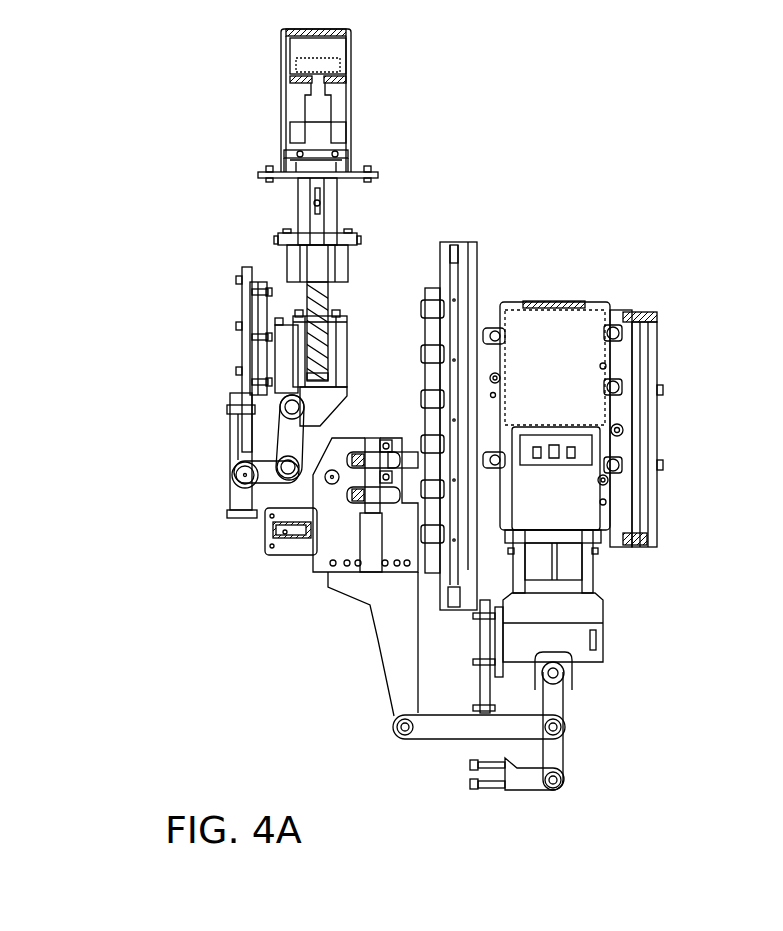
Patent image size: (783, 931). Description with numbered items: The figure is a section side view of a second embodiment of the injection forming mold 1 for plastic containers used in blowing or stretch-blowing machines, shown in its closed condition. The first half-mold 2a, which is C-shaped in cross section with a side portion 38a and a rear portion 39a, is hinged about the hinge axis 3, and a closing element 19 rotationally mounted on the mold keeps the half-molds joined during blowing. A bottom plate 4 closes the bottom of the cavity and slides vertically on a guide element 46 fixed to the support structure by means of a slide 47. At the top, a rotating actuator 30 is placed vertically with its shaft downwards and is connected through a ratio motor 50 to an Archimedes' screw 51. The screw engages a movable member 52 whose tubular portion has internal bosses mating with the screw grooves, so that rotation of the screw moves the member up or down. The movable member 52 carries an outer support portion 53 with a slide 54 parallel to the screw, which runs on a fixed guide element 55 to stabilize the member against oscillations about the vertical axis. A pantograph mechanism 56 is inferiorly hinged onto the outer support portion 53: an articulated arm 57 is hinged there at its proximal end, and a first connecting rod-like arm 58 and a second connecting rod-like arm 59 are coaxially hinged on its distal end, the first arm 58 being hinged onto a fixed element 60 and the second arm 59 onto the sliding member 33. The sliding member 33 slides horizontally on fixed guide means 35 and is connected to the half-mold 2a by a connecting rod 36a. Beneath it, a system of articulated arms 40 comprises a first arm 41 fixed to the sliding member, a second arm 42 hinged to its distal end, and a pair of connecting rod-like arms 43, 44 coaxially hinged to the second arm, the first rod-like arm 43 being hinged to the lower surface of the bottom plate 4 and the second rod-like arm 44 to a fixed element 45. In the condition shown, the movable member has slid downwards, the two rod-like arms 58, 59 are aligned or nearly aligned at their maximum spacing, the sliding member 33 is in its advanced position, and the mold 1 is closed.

The injection forming mold 1 is at (540, 124).
The first half-mold 2a is at (550, 318).
The hinge axis 3 is at (460, 242).
The bottom plate 4 is at (580, 650).
The closing element 19 is at (650, 413).
The actuator 30 is at (352, 78).
The sliding member 33 is at (327, 580).
The guide means 35 is at (282, 540).
The connecting rod 36a is at (402, 440).
The side portion 38a is at (578, 370).
The rear portion 39a is at (428, 330).
The system of articulated arms 40 is at (362, 720).
The first arm 41 is at (385, 645).
The second arm 42 is at (457, 725).
The first connecting rod-like arm 43 is at (557, 705).
The second connecting rod-like arm 44 is at (558, 758).
The fixed element 45 is at (520, 785).
The guide element 46 is at (480, 680).
The slide 47 is at (565, 675).
The ratio motor 50 is at (287, 277).
The Archimedes' screw 51 is at (330, 298).
The movable member 52 is at (343, 333).
The outer support portion 53 is at (285, 345).
The slide 54 is at (272, 365).
The guide element 55 is at (246, 305).
The pantograph mechanism 56 is at (212, 472).
The articulated arm 57 is at (296, 425).
The first connecting rod-like arm 58 is at (262, 485).
The second connecting rod-like arm 59 is at (300, 478).
The fixed element 60 is at (238, 450).